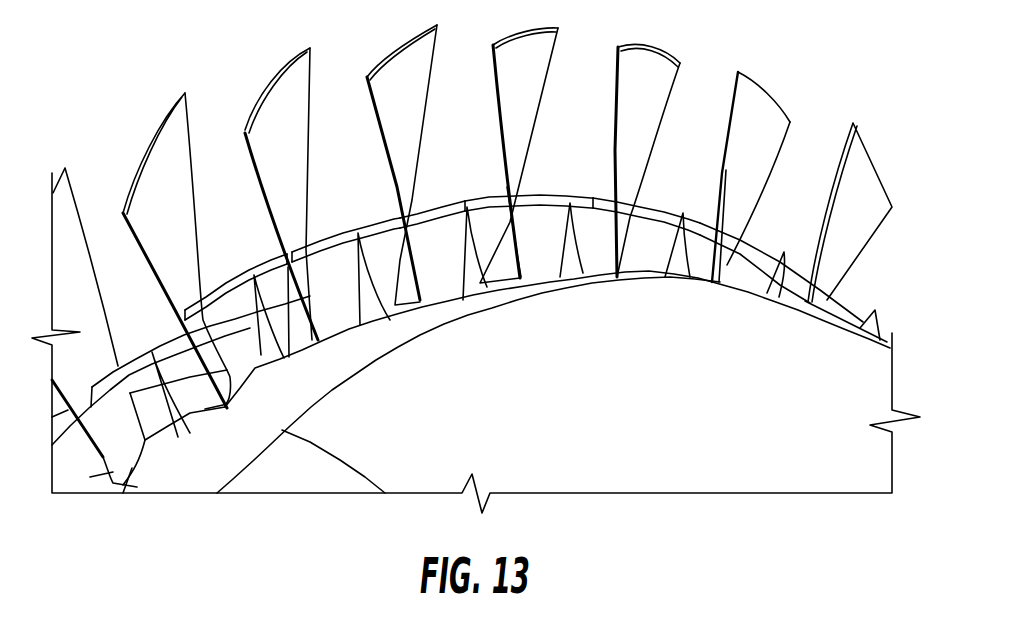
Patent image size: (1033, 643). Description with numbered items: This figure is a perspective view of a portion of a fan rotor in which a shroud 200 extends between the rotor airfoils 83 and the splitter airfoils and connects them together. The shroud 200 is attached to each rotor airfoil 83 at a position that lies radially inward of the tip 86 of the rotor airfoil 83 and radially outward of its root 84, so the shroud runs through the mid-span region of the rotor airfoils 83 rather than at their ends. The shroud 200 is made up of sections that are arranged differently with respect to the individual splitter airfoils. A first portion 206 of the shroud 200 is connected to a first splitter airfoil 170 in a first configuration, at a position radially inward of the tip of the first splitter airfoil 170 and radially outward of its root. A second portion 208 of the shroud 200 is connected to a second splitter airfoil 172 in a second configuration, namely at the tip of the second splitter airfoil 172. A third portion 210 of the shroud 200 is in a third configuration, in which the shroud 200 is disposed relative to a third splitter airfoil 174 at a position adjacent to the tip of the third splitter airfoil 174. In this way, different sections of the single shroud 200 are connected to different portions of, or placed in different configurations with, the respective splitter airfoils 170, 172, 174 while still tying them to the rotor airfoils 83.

The rotor airfoil 83 is at (163, 175).
The root 84 is at (800, 303).
The tip 86 is at (767, 88).
The first splitter airfoil 170 is at (677, 267).
The second splitter airfoil 172 is at (472, 280).
The third splitter airfoil 174 is at (372, 310).
The shroud 200 is at (524, 232).
The first portion 206 is at (643, 210).
The second portion 208 is at (437, 200).
The third portion 210 is at (363, 222).